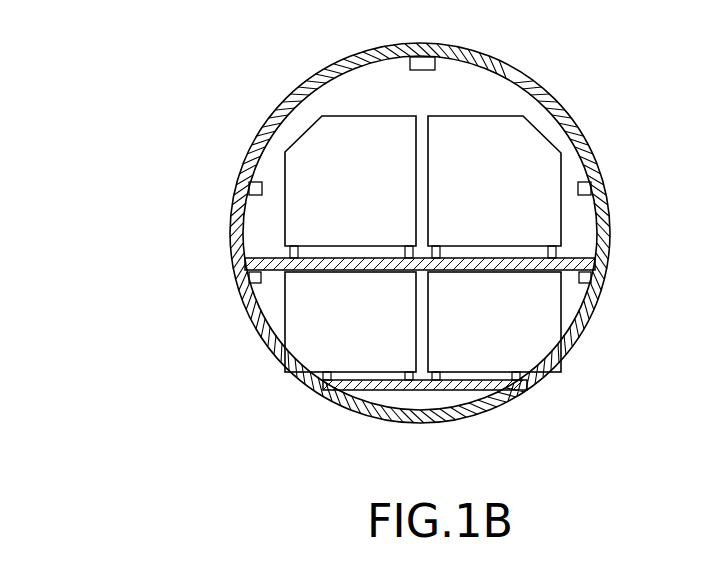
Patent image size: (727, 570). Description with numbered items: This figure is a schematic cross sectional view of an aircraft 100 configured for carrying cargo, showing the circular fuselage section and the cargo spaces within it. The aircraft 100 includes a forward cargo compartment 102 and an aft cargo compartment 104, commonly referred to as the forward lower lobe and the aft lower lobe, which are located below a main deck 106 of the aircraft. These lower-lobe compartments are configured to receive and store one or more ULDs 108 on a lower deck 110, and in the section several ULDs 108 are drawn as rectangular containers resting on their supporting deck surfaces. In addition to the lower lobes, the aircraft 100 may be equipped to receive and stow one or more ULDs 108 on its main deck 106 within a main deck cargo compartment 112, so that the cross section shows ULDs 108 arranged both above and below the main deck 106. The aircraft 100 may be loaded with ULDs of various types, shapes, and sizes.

The aircraft 100 is at (152, 117).
The forward cargo compartment 102 is at (257, 295).
The aft cargo compartment 104 is at (268, 298).
The main deck 106 is at (572, 253).
The ULD 108 is at (529, 143).
The lower deck 110 is at (473, 390).
The main deck cargo compartment 112 is at (298, 113).